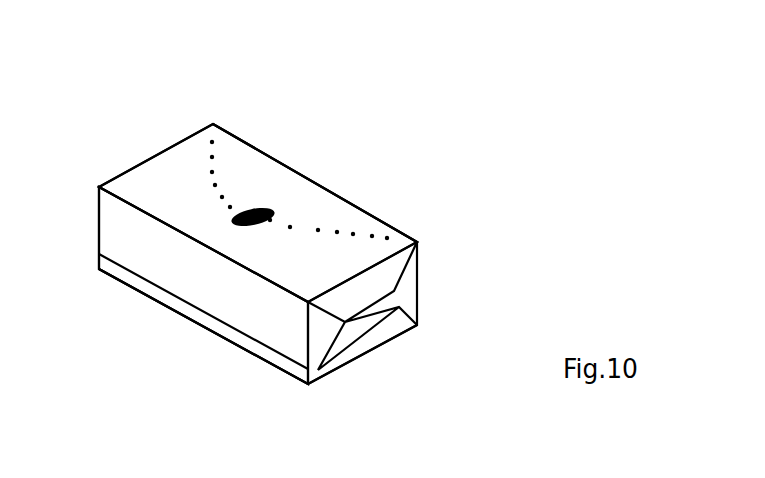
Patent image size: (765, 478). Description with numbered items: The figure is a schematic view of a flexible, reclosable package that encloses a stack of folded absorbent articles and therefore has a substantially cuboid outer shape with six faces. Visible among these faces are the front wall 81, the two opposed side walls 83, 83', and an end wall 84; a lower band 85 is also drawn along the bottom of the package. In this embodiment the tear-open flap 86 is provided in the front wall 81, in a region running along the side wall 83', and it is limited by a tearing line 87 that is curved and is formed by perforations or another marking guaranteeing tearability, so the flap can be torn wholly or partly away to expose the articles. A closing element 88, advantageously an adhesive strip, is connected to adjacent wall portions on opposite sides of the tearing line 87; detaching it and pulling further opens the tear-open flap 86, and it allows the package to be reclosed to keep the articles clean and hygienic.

The front wall 81 is at (187, 208).
The side wall 83 is at (175, 285).
The side wall 83' is at (315, 175).
The end wall 84 is at (366, 319).
The bottom plate 85 is at (250, 342).
The tear-open flap 86 is at (297, 203).
The tearing line 87 is at (212, 172).
The closing element 88 is at (240, 223).